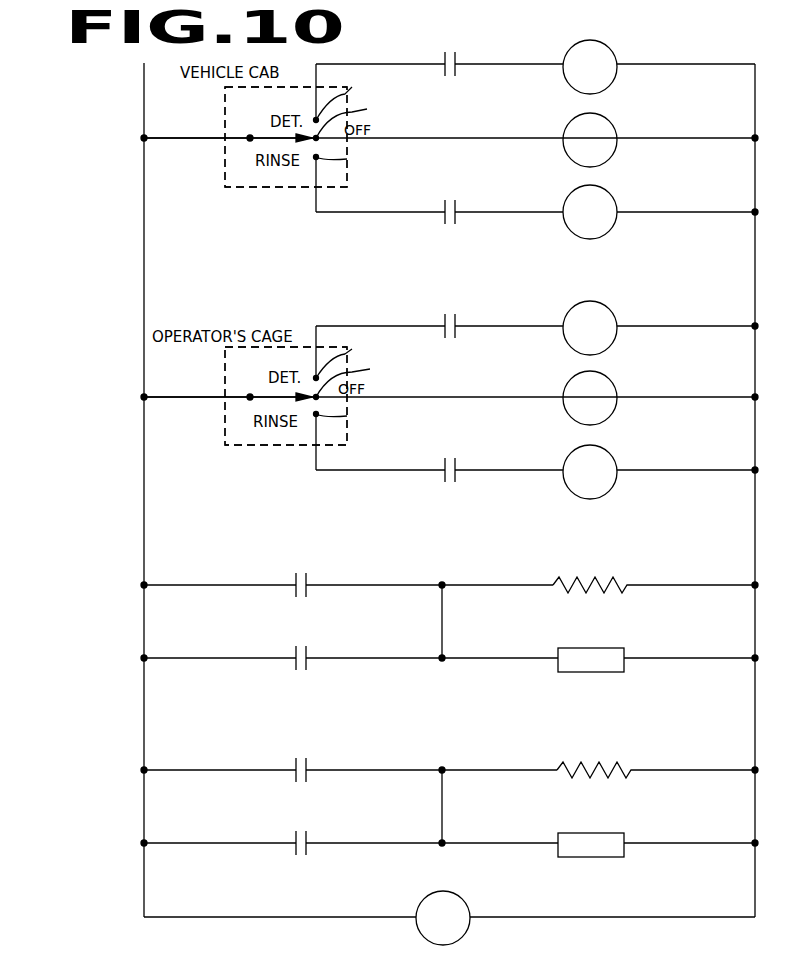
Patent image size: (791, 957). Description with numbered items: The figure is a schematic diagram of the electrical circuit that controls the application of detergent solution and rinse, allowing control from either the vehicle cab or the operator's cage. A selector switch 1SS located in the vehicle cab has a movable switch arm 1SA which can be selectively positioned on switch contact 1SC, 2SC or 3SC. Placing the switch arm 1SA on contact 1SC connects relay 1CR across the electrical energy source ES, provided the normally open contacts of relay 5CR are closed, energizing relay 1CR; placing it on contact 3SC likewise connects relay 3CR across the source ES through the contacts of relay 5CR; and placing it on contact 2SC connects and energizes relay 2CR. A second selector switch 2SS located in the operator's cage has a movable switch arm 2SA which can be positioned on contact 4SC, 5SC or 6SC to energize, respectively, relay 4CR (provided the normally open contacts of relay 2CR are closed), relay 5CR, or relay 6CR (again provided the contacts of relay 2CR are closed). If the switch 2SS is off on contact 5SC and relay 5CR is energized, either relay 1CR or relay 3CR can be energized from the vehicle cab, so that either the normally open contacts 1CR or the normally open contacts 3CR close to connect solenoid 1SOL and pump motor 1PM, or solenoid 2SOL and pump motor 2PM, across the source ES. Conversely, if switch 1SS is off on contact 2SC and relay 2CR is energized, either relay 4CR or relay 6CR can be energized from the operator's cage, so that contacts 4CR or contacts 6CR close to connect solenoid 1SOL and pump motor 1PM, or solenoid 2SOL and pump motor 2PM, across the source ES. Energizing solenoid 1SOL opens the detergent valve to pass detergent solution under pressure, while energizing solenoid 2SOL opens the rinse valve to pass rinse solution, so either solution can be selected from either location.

The movable switch arm 1SA is at (250, 138).
The selector switch 1SS is at (272, 194).
The switch contact 1SC is at (351, 99).
The switch contact 2SC is at (358, 119).
The switch contact 3SC is at (353, 161).
The movable switch arm 2SA is at (250, 397).
The second selector switch 2SS is at (272, 456).
The contact 4SC is at (350, 359).
The contact 5SC is at (360, 379).
The contact 6SC is at (354, 416).
The relay 1CR is at (307, 585).
The relay 2CR is at (456, 326).
The relay 3CR is at (307, 770).
The relay 4CR is at (307, 658).
The relay 5CR is at (456, 64).
The relay 6CR is at (307, 843).
The solenoid 1SOL is at (597, 582).
The pump motor 1PM is at (600, 649).
The solenoid 2SOL is at (618, 767).
The pump motor 2PM is at (592, 834).
The electrical energy source ES is at (443, 918).